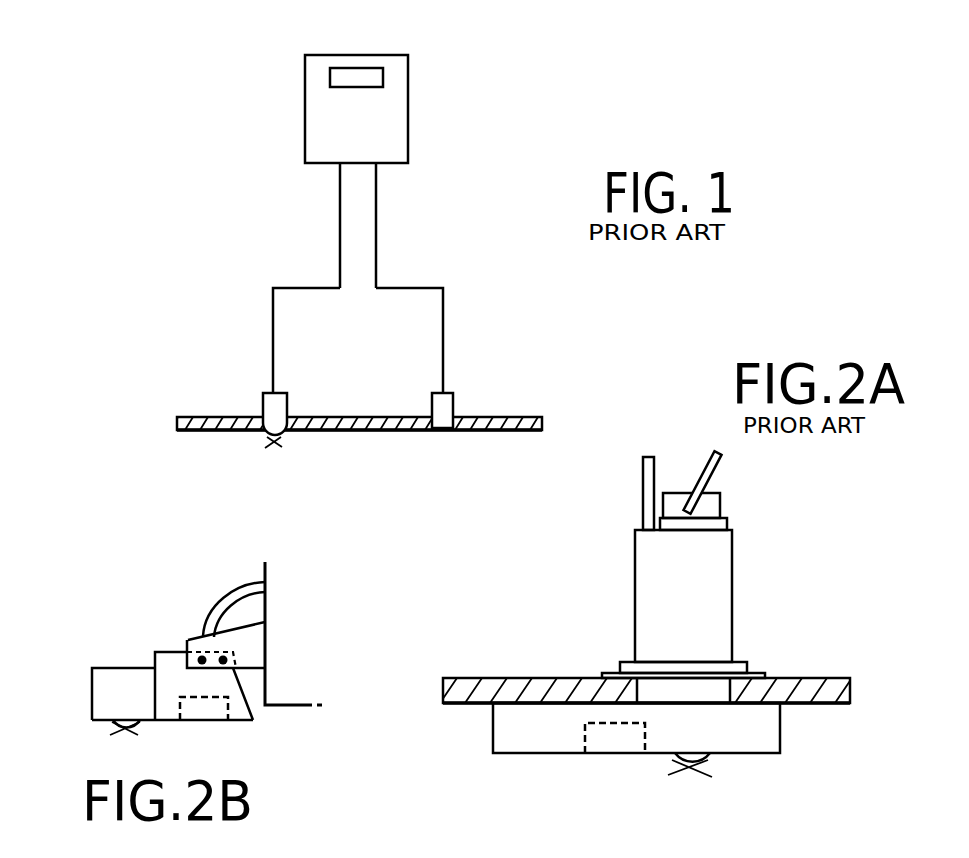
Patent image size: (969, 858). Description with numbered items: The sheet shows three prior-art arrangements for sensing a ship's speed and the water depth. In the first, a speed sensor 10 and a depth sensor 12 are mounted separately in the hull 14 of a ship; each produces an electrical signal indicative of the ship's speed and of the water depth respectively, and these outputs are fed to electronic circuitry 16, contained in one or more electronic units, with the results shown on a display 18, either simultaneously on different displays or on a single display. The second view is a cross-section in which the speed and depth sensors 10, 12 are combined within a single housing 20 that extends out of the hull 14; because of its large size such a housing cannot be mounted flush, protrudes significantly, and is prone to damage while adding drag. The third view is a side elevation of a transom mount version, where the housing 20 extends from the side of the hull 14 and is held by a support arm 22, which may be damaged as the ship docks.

In FIG. 1, the speed sensor 10 is at (272, 413).
In FIG. 2A, the speed sensor 10 is at (713, 743).
In FIG. 2B, the speed sensor 10 is at (100, 693).
In FIG. 1, the depth sensor 12 is at (447, 413).
In FIG. 2A, the depth sensor 12 is at (623, 757).
In FIG. 2B, the depth sensor 12 is at (210, 722).
In FIG. 1, the hull 14 is at (532, 432).
In FIG. 2A, the hull 14 is at (828, 678).
In FIG. 2B, the hull 14 is at (267, 680).
In FIG. 1, the electronic circuitry 16 is at (397, 113).
In FIG. 1, the display 18 is at (364, 77).
In FIG. 2A, the housing 20 is at (767, 735).
In FIG. 2B, the housing 20 is at (123, 683).
In FIG. 2B, the support arm 22 is at (228, 640).